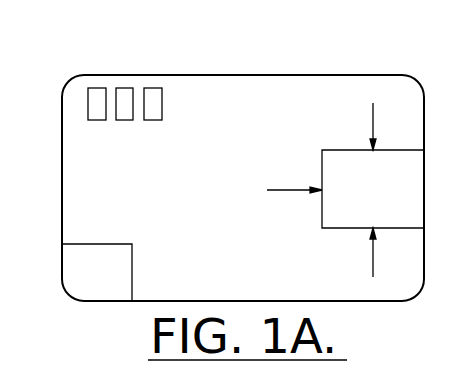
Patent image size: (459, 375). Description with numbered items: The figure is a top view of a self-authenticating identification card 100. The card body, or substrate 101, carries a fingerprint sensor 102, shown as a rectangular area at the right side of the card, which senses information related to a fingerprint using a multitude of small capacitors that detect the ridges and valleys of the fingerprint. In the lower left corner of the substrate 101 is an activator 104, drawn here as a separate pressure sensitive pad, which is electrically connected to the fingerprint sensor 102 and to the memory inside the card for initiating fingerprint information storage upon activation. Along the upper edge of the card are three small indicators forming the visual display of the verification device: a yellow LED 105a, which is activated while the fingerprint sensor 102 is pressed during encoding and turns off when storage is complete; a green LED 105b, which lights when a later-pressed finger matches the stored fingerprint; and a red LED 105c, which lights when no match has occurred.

The identification card 100 is at (342, 64).
The substrate 101 is at (235, 83).
The fingerprint sensor 102 is at (330, 212).
The activator 104 is at (118, 284).
The yellow LED 105a is at (98, 98).
The green LED 105b is at (125, 98).
The red LED 105c is at (153, 98).